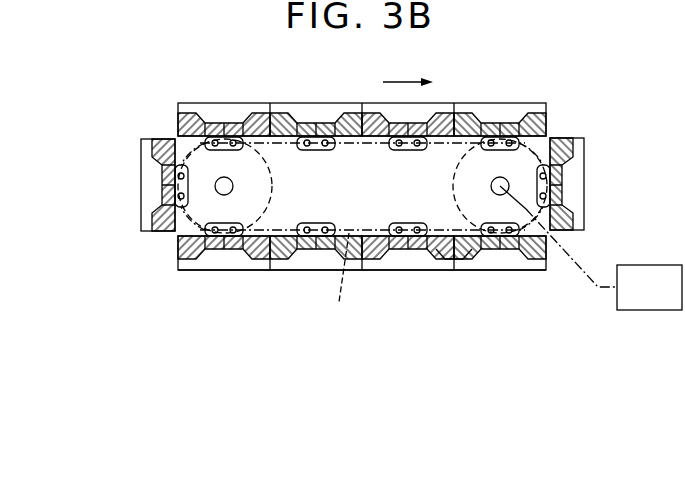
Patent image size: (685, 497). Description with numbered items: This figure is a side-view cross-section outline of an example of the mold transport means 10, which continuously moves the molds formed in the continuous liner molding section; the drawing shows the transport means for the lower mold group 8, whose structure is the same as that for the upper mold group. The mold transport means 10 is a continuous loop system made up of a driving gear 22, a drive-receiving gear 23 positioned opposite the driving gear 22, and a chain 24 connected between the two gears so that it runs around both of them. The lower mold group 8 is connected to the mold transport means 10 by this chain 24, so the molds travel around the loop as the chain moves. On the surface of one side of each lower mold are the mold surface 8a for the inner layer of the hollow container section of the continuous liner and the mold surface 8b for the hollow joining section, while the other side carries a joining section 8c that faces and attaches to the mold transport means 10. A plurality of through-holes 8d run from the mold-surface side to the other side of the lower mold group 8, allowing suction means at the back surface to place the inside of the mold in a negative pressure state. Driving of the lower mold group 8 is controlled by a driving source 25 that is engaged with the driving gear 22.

The lower mold group 8 is at (166, 107).
The mold surface 8a is at (417, 249).
The mold surface 8b is at (447, 259).
The joining section 8c is at (316, 151).
The through-hole 8d is at (487, 248).
The mold transport means 10 is at (157, 253).
The driving gear 22 is at (523, 155).
The drive-receiving gear 23 is at (186, 222).
The chain 24 is at (340, 280).
The driving source 25 is at (653, 265).